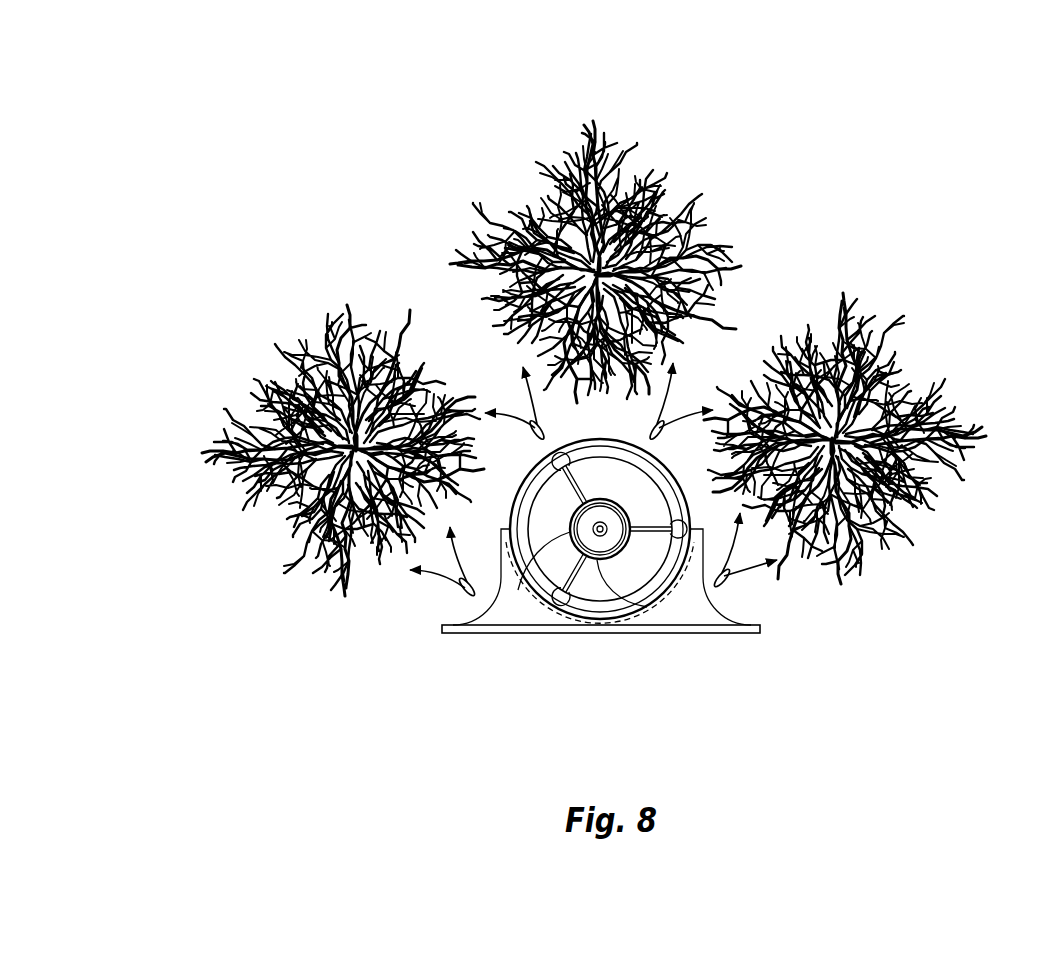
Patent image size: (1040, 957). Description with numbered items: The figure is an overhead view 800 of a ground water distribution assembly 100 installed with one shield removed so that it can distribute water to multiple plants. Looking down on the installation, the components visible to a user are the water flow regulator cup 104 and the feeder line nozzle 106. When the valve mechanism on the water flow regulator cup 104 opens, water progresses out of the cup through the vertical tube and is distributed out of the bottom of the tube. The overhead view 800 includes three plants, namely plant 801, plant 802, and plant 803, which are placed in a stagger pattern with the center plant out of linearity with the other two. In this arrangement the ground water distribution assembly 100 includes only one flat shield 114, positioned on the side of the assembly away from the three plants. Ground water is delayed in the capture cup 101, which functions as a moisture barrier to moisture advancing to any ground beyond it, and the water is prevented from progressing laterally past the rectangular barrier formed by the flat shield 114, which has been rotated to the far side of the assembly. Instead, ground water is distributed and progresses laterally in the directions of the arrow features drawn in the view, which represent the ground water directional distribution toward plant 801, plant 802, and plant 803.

The overhead view 800 is at (417, 178).
The plant 801 is at (233, 393).
The plant 802 is at (703, 217).
The plant 803 is at (943, 390).
The ground water distribution assembly 100 is at (713, 647).
The capture cup 101 is at (517, 481).
The water flow regulator cup 104 is at (647, 607).
The feeder line nozzle 106 is at (518, 590).
The flat shield 114 is at (600, 635).